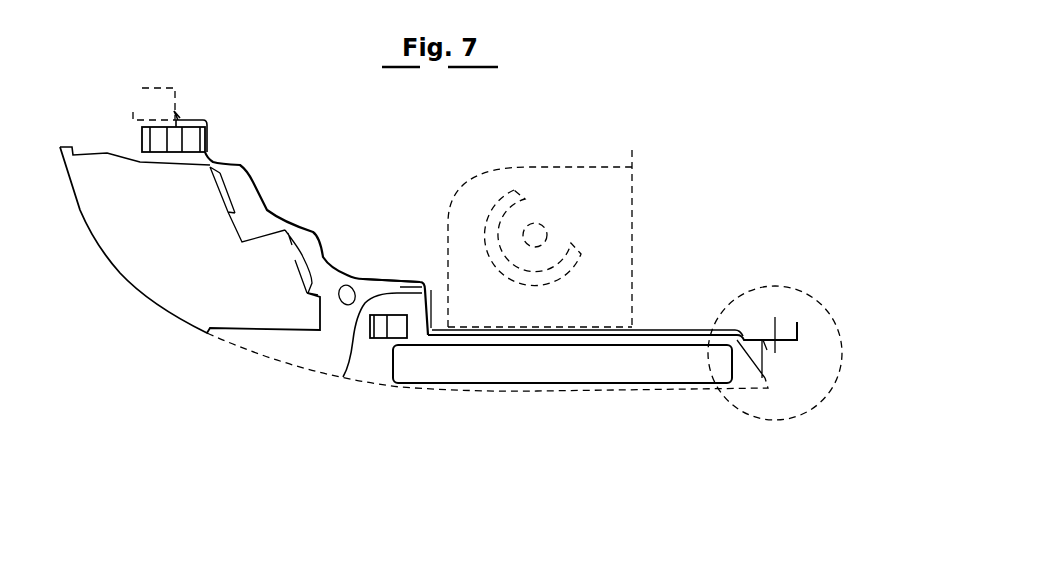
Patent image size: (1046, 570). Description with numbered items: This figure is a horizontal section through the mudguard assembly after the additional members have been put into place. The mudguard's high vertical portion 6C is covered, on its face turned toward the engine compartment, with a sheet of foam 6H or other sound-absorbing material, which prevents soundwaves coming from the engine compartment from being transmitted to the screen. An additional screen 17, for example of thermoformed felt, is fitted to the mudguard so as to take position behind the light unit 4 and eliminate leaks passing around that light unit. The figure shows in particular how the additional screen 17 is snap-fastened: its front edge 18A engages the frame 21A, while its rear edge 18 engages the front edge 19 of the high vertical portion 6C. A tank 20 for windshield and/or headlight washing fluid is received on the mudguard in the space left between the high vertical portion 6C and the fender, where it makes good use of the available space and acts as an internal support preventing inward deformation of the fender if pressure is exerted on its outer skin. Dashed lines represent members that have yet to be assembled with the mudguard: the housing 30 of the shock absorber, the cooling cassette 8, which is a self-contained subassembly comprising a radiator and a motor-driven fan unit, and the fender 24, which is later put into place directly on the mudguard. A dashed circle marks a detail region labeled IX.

The light unit 4 is at (148, 270).
The cooling cassette 8 is at (187, 97).
The additional screen 17 is at (257, 183).
The rear edge 18 is at (417, 280).
The front edge 18A is at (192, 117).
The frame 21A is at (192, 138).
The front edge 19 is at (343, 377).
The tank 20 is at (618, 363).
The fender 24 is at (537, 392).
The housing 30 is at (573, 193).
The high vertical portion 6C is at (648, 323).
The sheet of foam 6H is at (698, 365).
The detail section IX is at (743, 420).